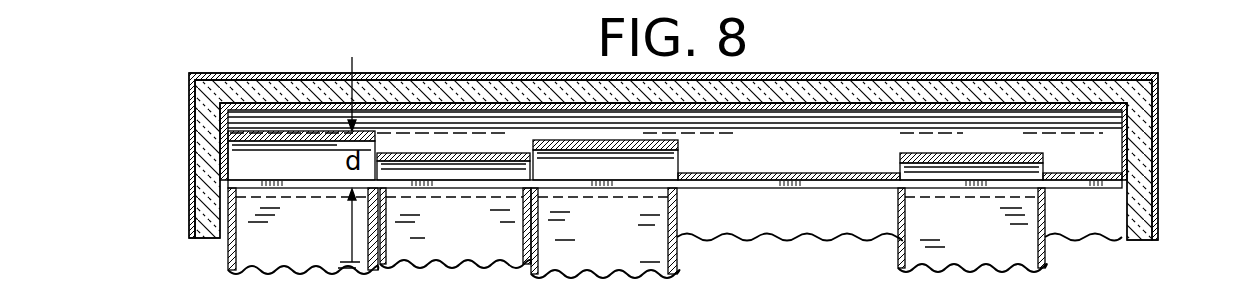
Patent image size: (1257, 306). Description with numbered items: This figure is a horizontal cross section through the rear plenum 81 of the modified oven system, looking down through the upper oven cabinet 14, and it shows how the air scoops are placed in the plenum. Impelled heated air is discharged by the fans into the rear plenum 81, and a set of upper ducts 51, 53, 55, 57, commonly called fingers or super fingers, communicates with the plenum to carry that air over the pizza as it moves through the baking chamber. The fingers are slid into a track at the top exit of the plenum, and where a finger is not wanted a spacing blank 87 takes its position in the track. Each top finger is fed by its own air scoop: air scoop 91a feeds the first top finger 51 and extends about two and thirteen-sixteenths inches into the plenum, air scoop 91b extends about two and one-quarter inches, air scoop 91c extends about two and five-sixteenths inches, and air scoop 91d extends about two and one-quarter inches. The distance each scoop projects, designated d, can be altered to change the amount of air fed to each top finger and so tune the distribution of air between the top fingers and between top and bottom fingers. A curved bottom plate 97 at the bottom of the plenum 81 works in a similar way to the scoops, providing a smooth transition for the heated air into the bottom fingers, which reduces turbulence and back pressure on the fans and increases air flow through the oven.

The upper oven cabinet 14 is at (1160, 154).
The curved bottom plate 97 is at (820, 122).
The rear plenum 81 is at (792, 152).
The air scoop 91a is at (303, 133).
The air scoop 91b is at (462, 153).
The air scoop 91c is at (585, 140).
The air scoop 91d is at (974, 155).
The spacing blank 87 is at (754, 188).
The upper duct 51 is at (318, 245).
The upper duct 53 is at (470, 245).
The upper duct 55 is at (623, 245).
The upper duct 57 is at (993, 245).